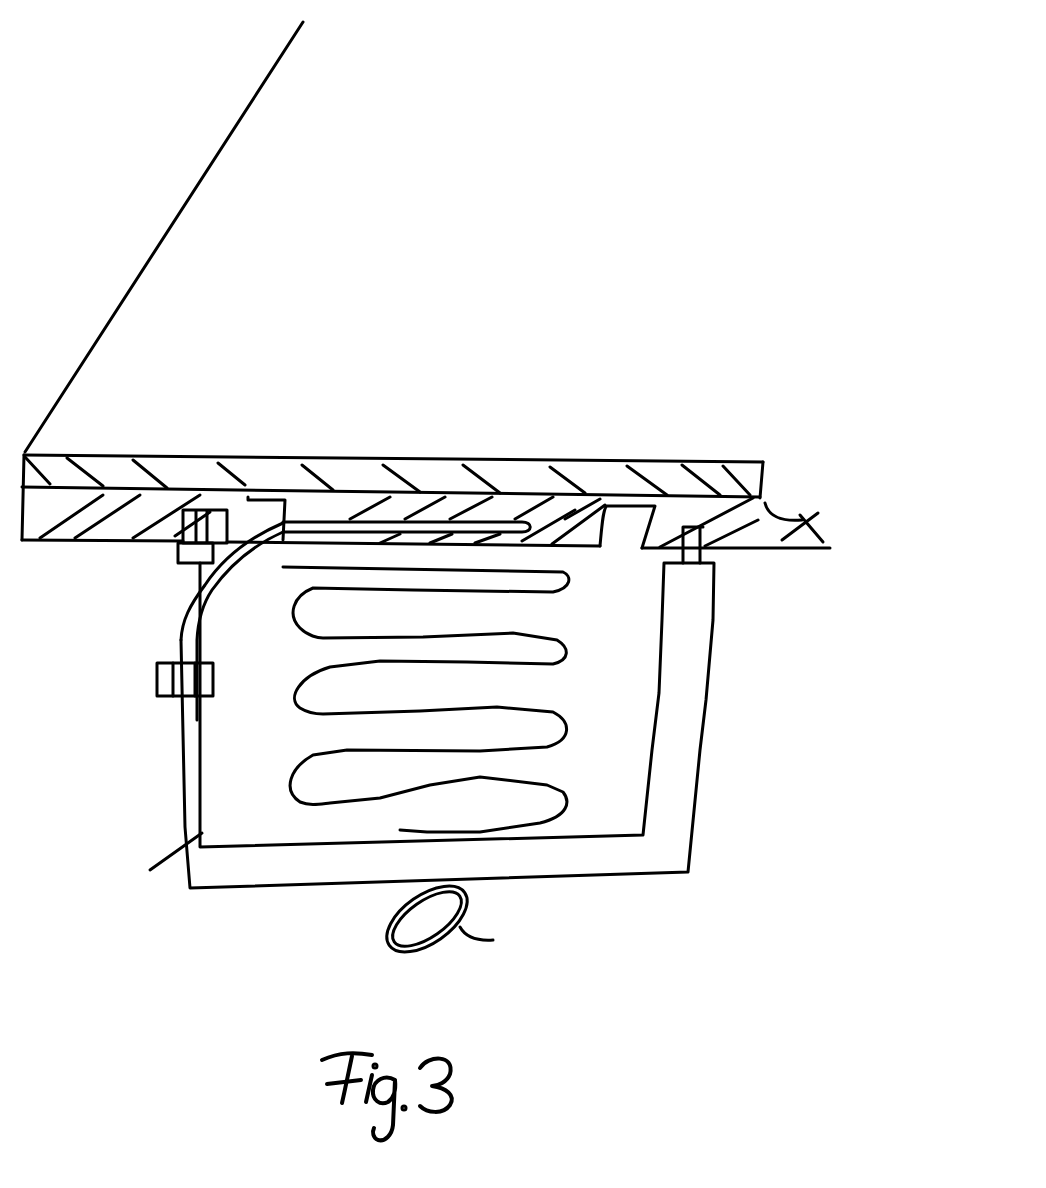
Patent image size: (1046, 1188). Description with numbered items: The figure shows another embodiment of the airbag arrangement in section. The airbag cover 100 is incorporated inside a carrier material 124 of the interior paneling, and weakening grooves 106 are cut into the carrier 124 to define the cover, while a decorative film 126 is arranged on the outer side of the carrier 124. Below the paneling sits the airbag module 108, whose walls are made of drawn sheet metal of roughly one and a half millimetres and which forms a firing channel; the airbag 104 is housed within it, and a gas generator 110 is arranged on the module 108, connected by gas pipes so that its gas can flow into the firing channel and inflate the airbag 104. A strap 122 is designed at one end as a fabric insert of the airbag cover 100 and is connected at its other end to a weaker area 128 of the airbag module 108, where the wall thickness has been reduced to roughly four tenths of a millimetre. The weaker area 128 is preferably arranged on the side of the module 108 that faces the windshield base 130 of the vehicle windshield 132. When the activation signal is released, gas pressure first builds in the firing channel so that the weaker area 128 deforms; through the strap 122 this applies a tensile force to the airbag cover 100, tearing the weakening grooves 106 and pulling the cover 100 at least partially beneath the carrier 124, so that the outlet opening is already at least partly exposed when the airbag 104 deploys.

The airbag cover 100 is at (557, 513).
The airbag 104 is at (540, 668).
The weakening grooves 106 is at (248, 502).
The airbag module 108 is at (700, 750).
The gas generator 110 is at (471, 920).
The strap 122 is at (325, 530).
The carrier material 124 is at (760, 527).
The decorative film 126 is at (600, 477).
The weaker area 128 is at (150, 563).
The windshield base 130 is at (53, 430).
The windshield 132 is at (222, 160).